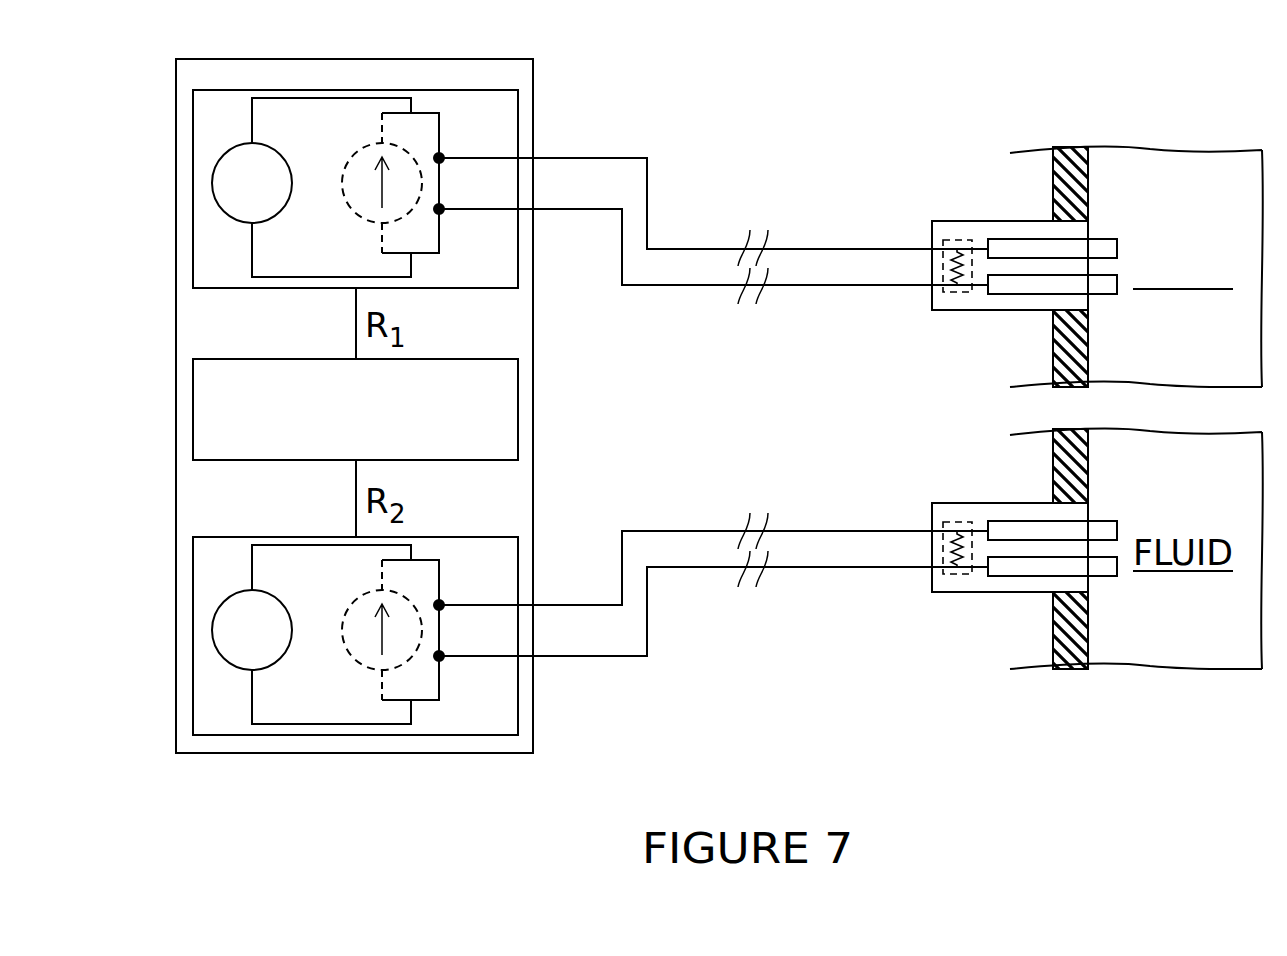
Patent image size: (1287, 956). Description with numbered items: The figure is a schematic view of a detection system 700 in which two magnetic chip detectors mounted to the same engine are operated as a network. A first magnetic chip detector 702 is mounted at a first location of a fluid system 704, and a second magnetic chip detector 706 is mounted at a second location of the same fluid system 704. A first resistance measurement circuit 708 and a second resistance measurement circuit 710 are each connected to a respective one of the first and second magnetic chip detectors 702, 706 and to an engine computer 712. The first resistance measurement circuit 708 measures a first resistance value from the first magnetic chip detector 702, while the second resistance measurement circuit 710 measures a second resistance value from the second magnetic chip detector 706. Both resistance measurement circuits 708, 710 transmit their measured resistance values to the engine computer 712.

The detection system 700 is at (740, 103).
The first magnetic chip detector 702 is at (955, 312).
The fluid system 704 is at (942, 166).
The second magnetic chip detector 706 is at (955, 594).
The first resistance measurement circuit 708 is at (518, 118).
The second resistance measurement circuit 710 is at (518, 562).
The engine computer 712 is at (518, 412).